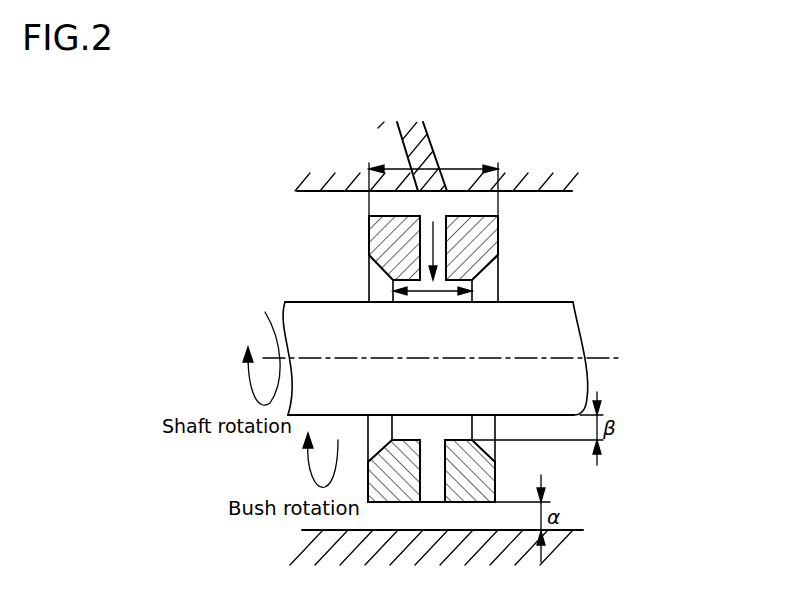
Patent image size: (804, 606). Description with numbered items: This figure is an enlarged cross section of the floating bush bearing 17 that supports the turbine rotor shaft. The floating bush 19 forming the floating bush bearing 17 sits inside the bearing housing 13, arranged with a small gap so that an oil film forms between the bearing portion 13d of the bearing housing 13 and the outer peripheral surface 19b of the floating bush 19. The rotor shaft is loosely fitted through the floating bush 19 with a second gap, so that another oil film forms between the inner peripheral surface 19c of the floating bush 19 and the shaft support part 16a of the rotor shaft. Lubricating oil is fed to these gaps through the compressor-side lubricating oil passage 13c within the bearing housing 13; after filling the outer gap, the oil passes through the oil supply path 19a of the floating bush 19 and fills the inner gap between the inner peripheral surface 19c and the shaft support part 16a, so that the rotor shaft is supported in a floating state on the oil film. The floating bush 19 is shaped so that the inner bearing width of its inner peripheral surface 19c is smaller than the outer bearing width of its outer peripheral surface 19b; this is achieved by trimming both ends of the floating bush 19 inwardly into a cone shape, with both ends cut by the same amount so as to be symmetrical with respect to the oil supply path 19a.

The bearing housing 13 is at (543, 176).
The compressor-side lubricating oil passage 13c is at (413, 135).
The bearing portion 13d is at (534, 194).
The shaft support part 16a is at (588, 379).
The floating bush bearing 17 is at (518, 113).
The floating bush 19 is at (497, 243).
The oil supply path 19a is at (497, 230).
The outer peripheral surface 19b is at (465, 504).
The inner peripheral surface 19c is at (450, 437).